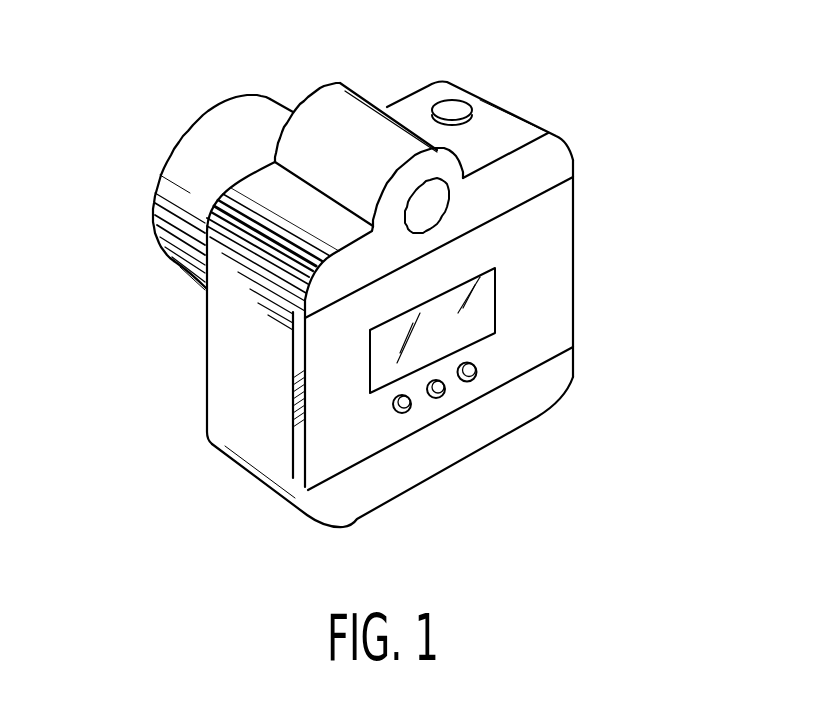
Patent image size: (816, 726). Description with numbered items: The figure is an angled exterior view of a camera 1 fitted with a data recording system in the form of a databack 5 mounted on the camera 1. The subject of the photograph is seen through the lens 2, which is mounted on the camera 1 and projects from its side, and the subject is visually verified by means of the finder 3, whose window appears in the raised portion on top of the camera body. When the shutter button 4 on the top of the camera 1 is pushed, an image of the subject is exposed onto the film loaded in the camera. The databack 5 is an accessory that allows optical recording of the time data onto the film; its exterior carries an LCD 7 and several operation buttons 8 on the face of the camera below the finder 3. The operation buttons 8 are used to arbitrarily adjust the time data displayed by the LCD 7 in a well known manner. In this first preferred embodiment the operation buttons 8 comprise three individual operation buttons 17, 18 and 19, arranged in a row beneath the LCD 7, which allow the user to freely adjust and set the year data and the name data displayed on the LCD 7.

The camera 1 is at (228, 403).
The lens 2 is at (188, 159).
The finder 3 is at (415, 205).
The shutter button 4 is at (458, 108).
The databack 5 is at (566, 213).
The LCD 7 is at (383, 368).
The operation buttons 8 is at (603, 463).
The operation button 17 is at (408, 412).
The operation button 18 is at (443, 395).
The operation button 19 is at (473, 382).